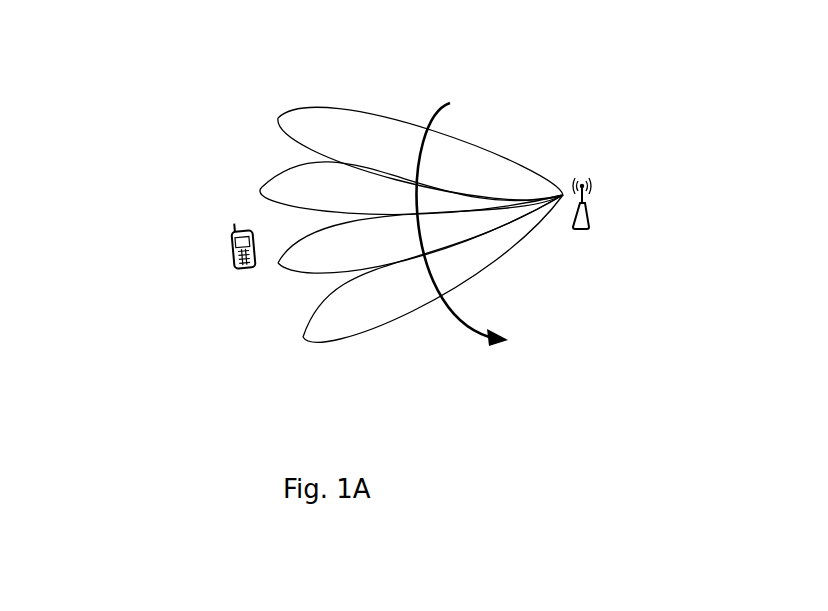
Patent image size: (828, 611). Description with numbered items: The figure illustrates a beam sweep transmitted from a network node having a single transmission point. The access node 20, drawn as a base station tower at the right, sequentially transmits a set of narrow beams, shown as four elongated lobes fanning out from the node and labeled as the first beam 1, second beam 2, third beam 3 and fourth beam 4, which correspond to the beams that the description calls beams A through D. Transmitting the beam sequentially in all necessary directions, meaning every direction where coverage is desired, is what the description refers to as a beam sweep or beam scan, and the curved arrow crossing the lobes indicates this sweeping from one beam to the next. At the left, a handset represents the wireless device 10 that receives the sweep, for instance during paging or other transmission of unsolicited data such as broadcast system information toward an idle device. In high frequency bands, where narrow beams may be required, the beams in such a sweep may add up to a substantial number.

The first beam 1 is at (420, 153).
The second beam 2 is at (411, 188).
The third beam 3 is at (420, 234).
The fourth beam 4 is at (433, 268).
The wireless device 10 is at (230, 247).
The access node 20 is at (590, 212).